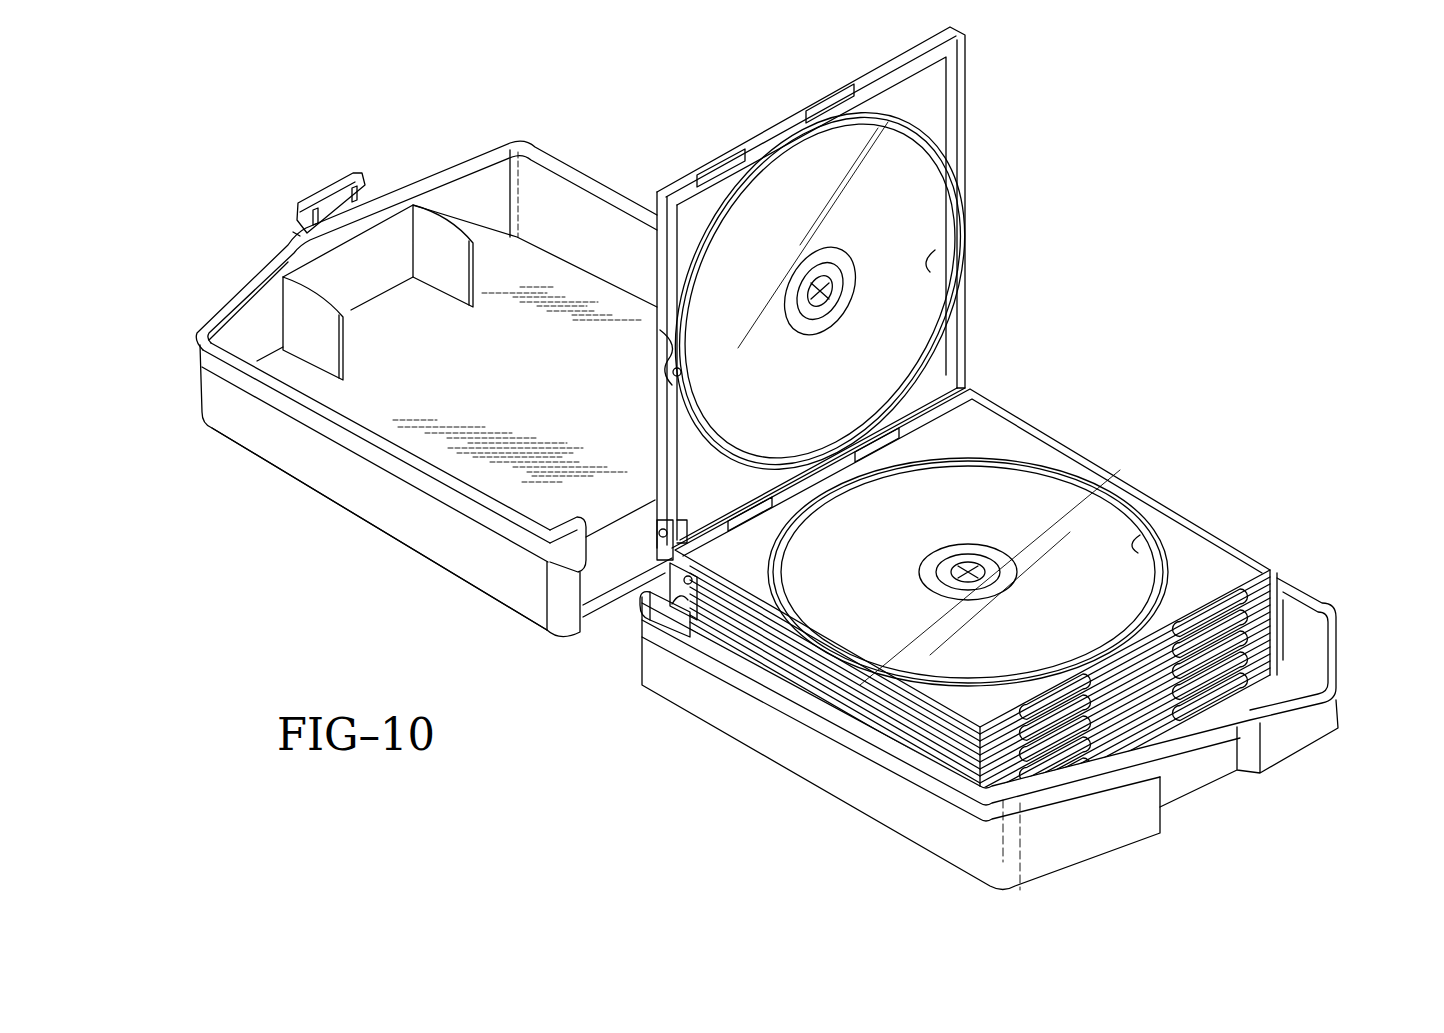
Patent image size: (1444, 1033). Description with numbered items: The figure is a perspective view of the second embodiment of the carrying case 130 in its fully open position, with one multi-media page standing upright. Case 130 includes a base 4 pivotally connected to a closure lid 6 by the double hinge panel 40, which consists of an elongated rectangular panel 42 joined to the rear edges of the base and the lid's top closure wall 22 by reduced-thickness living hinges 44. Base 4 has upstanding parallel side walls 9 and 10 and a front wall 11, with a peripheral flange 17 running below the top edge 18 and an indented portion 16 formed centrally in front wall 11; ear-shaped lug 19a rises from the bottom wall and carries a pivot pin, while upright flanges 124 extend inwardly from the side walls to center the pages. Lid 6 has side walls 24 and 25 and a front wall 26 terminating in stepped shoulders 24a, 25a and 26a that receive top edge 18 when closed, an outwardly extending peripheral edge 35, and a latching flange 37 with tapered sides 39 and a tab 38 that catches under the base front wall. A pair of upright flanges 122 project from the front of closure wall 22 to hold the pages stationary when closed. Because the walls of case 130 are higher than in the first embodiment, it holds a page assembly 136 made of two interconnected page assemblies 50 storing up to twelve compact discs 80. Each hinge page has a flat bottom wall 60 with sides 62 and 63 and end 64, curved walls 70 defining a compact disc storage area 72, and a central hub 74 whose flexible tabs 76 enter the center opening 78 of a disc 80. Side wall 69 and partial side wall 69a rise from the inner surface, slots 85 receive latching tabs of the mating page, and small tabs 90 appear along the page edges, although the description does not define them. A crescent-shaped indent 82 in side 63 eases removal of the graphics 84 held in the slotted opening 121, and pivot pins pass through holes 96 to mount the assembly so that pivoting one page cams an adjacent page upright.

The base 4 is at (886, 824).
The closure lid 6 is at (330, 500).
The side wall 9 is at (873, 797).
The side wall 10 is at (1290, 587).
The front wall 11 is at (1293, 723).
The indented portion 16 is at (1193, 777).
The peripheral flange 17 is at (1333, 633).
The top edge 18 is at (1087, 790).
The lug 19a is at (683, 610).
The top closure wall 22 is at (489, 383).
The side wall 24 is at (407, 530).
The stepped shoulder 24a is at (480, 533).
The side wall 25 is at (548, 203).
The stepped shoulder 25a is at (587, 197).
The front wall 26 is at (463, 200).
The stepped shoulder 26a is at (500, 192).
The peripheral edge 35 is at (537, 153).
The latching flange 37 is at (333, 190).
The tab 38 is at (330, 220).
The tapered sides 39 is at (373, 183).
The double hinge panel 40 is at (607, 638).
The panel 42 is at (613, 600).
The living hinges 44 is at (670, 570).
The page assembly 50 is at (1072, 452).
The bottom wall 60 is at (938, 87).
The side 62 is at (968, 186).
The side 63 is at (657, 257).
The end 64 is at (812, 107).
The side wall 69 is at (968, 292).
The side wall 69a is at (673, 580).
The curved walls 70 is at (940, 133).
The compact disc storage area 72 is at (935, 250).
The hub 74 is at (810, 310).
The flexible tabs 76 is at (830, 287).
The center opening 78 is at (810, 287).
The compact disc 80 is at (888, 199).
The crescent-shaped indent 82 is at (680, 372).
The graphics 84 is at (670, 348).
The slots 85 is at (1210, 563).
The tab 90 is at (887, 67).
The holes 96 is at (650, 523).
The slotted opening 121 is at (660, 430).
The upright flanges 122 is at (453, 290).
The upright flanges 124 is at (1277, 627).
The carrying case 130 is at (1160, 306).
The page assembly 136 is at (1128, 466).